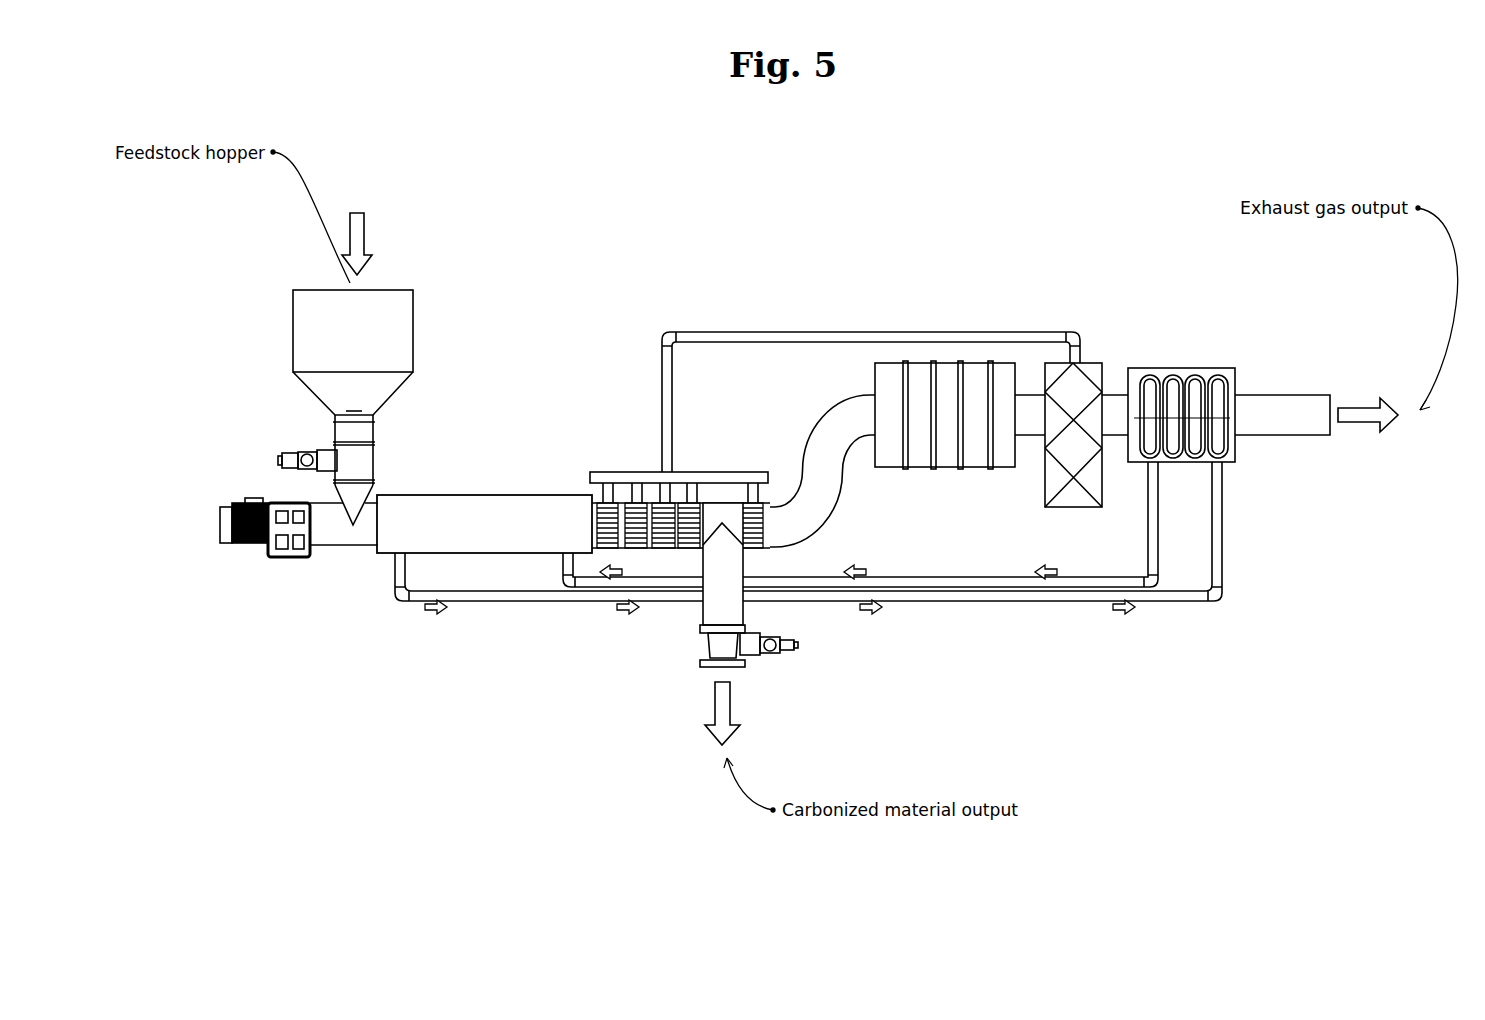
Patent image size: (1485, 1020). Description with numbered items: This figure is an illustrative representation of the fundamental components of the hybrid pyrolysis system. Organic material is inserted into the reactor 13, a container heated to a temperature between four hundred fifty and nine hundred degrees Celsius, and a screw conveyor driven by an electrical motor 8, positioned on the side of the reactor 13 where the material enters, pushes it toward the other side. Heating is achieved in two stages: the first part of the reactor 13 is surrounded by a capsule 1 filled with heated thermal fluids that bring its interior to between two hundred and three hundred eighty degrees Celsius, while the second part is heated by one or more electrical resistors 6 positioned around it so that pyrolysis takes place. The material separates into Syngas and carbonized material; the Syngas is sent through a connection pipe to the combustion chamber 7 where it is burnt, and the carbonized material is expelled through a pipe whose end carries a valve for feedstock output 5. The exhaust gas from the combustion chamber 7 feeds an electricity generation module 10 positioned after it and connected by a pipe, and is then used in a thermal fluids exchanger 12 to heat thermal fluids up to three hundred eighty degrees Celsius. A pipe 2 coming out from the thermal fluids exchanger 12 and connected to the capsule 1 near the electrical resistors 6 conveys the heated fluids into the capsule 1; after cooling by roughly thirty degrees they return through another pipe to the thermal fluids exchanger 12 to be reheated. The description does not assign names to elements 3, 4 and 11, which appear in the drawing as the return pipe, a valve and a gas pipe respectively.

The capsule 1 is at (438, 517).
The pipe 2 is at (561, 590).
The hot gas supply pipe 3 is at (396, 588).
The feed valve 4 is at (345, 458).
The valve for feedstock output 5 is at (745, 658).
The electrical resistors 6 is at (658, 478).
The combustion chamber 7 is at (917, 455).
The electrical motor 8 is at (220, 543).
The electricity generation module 10 is at (1073, 387).
The pyrolysis gas pipe 11 is at (835, 330).
The thermal fluids exchanger 12 is at (1173, 373).
The reactor 13 is at (497, 483).